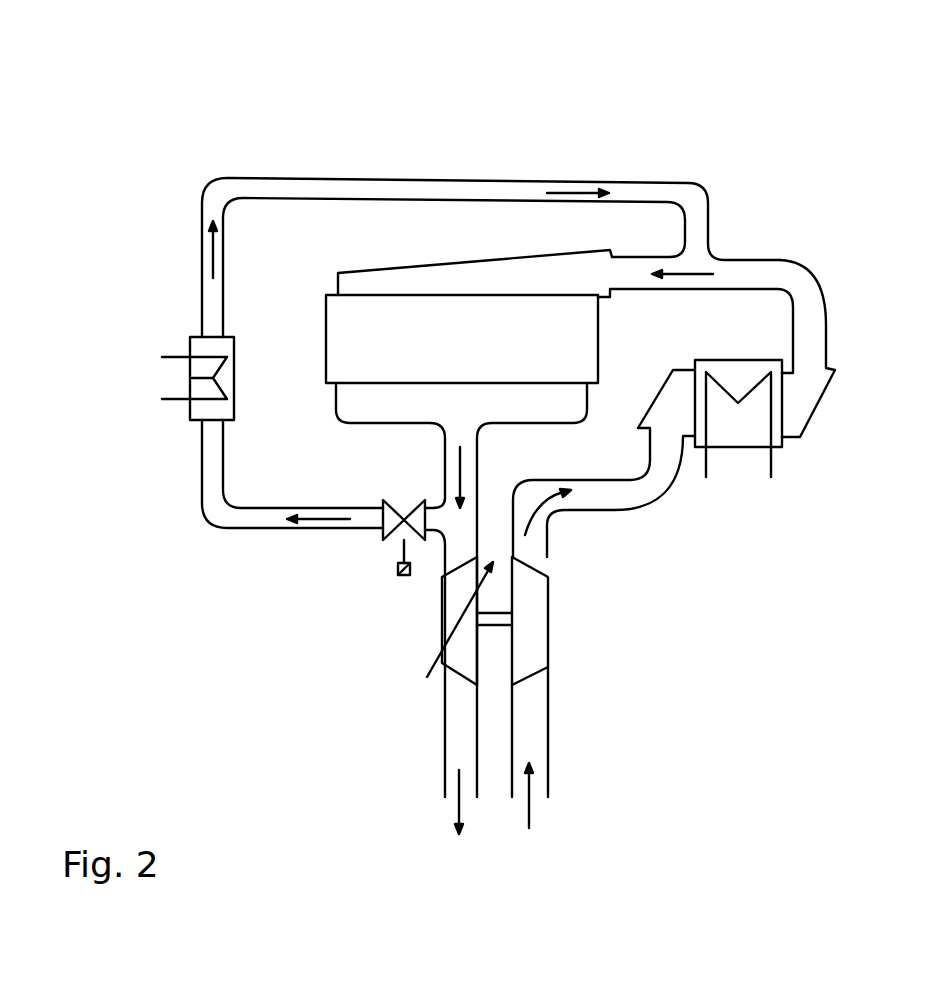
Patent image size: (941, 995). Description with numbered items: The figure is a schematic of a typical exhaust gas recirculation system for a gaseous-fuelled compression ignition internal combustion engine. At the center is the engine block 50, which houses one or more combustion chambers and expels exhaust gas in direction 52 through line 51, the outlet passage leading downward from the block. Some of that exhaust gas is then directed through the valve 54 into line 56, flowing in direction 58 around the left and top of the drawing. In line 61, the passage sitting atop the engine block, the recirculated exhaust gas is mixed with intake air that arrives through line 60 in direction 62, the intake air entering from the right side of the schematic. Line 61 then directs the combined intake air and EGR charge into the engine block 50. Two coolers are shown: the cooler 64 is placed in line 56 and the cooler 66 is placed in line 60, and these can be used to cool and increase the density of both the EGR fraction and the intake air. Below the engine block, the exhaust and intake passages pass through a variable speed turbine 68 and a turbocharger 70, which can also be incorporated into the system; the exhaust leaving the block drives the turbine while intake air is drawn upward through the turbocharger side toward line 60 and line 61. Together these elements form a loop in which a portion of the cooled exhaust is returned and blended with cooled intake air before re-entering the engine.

The engine block 50 is at (373, 347).
The line 51 is at (487, 492).
The direction 52 is at (460, 477).
The valve 54 is at (383, 530).
The line 56 is at (240, 530).
The direction 58 is at (583, 198).
The line 60 is at (793, 260).
The line 61 is at (453, 262).
The direction 62 is at (540, 507).
The cooler 64 is at (193, 388).
The cooler 66 is at (750, 428).
The variable speed turbine 68 is at (463, 658).
The turbocharger 70 is at (540, 635).